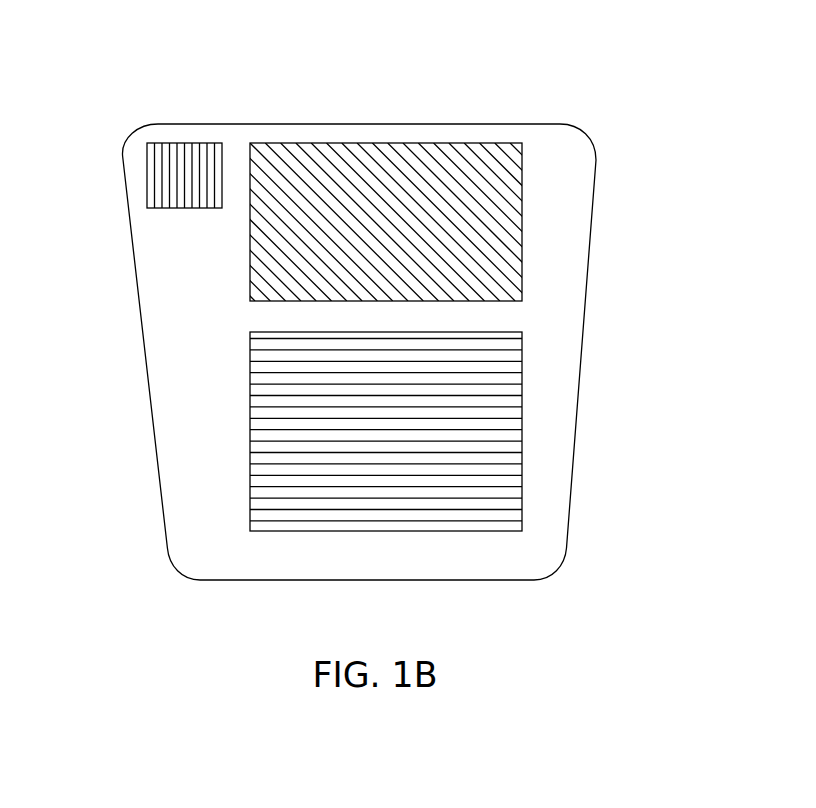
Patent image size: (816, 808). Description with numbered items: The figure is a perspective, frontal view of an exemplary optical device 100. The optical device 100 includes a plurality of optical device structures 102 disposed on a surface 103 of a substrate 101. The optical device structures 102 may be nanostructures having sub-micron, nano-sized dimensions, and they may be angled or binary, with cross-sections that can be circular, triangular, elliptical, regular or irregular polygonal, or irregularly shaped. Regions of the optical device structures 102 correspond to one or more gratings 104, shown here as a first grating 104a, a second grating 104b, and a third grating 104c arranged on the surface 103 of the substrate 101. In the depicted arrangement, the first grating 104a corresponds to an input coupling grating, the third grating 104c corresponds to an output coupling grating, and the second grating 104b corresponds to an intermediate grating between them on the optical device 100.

The optical device 100 is at (610, 75).
The substrate 101 is at (570, 358).
The optical device structures 102 is at (357, 292).
The surface 103 is at (538, 200).
The gratings 104 is at (357, 292).
The first grating 104a is at (193, 148).
The second grating 104b is at (387, 148).
The third grating 104c is at (522, 455).